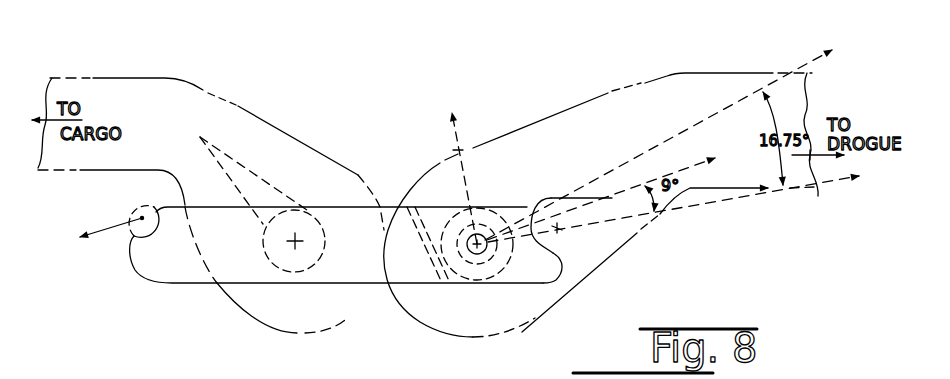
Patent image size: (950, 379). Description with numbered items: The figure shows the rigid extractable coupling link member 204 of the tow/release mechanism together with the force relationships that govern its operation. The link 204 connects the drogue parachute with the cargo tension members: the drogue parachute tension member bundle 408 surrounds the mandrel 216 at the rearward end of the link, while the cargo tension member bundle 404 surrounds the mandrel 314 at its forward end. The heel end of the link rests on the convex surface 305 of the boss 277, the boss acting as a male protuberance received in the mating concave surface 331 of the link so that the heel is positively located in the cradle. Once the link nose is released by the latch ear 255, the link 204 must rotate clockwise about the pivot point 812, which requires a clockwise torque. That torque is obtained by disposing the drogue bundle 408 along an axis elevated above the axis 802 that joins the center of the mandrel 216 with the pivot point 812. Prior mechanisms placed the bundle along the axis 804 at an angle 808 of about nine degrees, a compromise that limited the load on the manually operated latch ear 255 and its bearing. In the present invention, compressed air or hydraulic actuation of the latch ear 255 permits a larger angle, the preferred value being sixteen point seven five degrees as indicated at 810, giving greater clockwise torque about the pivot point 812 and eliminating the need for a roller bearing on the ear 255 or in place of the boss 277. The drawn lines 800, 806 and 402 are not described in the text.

The cargo tension member bundle 404 is at (142, 58).
The mandrel 314 is at (287, 212).
The latch ear 255 is at (124, 210).
The coupling link member 204 is at (388, 284).
The mandrel 216 is at (451, 284).
The shaft 402 is at (481, 250).
The concave surface 331 is at (510, 204).
The reference axis 800 is at (455, 143).
The drogue parachute tension member bundle 408 is at (571, 108).
The boss 277 is at (553, 199).
The axis 804 is at (617, 192).
The cable angle line 806 is at (708, 120).
The angle 808 is at (676, 206).
The pivot point 812 is at (560, 230).
The axis 802 is at (765, 191).
The angle of 16.75 degrees 810 is at (806, 89).
The convex surface 305 is at (560, 268).